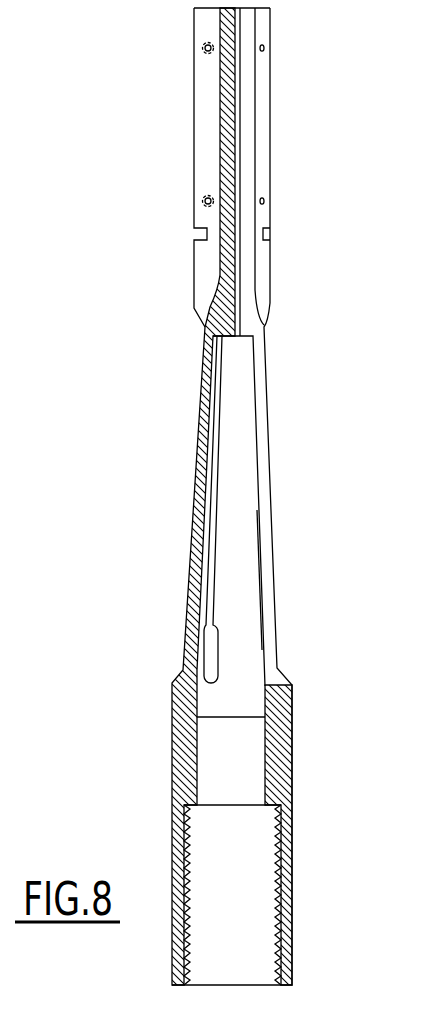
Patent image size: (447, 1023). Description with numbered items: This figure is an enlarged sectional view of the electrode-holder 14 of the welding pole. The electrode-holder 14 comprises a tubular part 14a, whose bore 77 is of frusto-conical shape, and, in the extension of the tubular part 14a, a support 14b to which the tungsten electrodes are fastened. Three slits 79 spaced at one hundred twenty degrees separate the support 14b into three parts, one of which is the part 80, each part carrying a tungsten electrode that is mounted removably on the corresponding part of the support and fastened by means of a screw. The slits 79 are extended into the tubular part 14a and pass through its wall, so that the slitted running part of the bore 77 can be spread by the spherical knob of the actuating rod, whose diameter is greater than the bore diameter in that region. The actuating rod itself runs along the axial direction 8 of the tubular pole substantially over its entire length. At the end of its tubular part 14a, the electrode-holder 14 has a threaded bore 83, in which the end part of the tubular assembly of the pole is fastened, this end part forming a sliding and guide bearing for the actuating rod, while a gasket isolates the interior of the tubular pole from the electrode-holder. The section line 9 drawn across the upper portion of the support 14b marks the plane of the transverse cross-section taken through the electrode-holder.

The section line 9- 9 is at (133, 8).
The electrode-holder 14 is at (283, 548).
The tubular part 14a is at (190, 587).
The support 14b is at (195, 191).
The part of the support 80 is at (208, 123).
The slits 79 is at (238, 186).
The axial direction 8 is at (242, 372).
The bore 77 is at (262, 604).
The threaded bore 83 is at (283, 920).